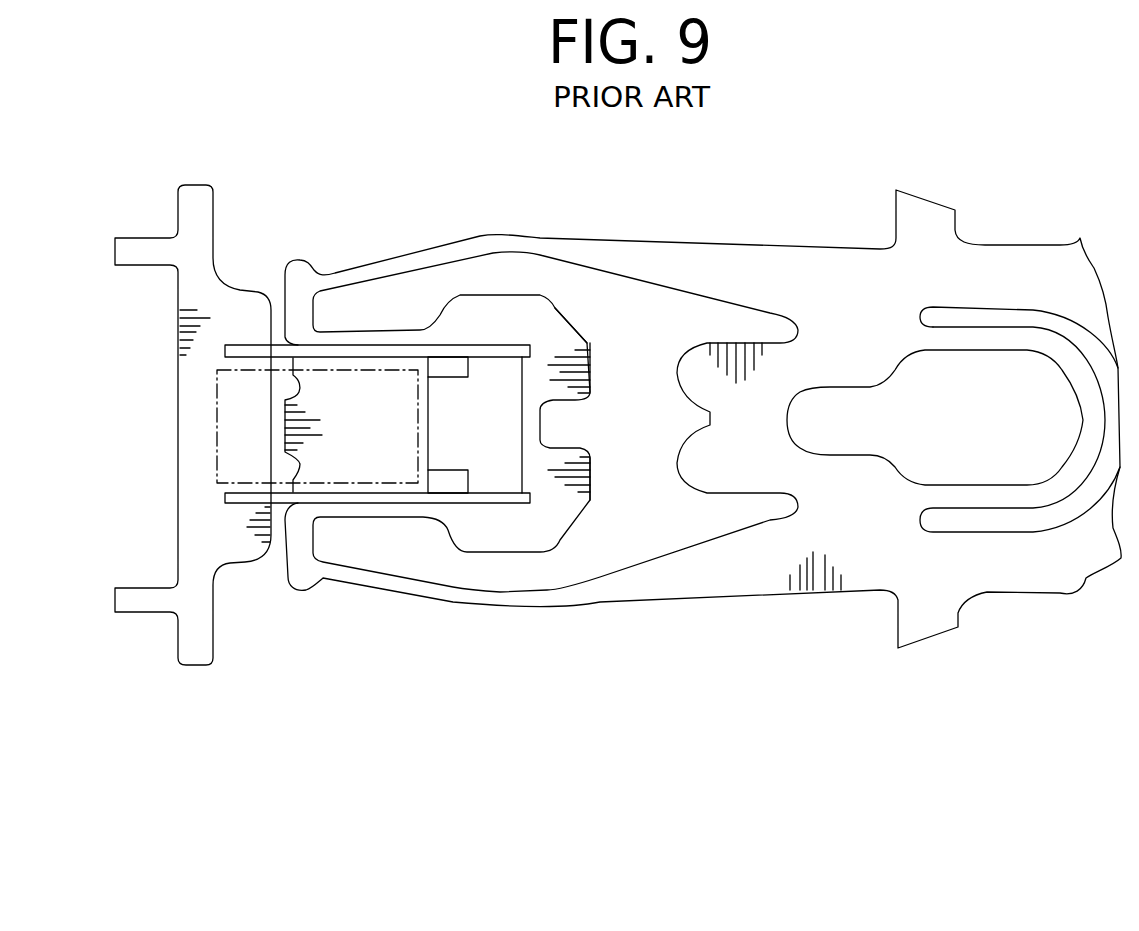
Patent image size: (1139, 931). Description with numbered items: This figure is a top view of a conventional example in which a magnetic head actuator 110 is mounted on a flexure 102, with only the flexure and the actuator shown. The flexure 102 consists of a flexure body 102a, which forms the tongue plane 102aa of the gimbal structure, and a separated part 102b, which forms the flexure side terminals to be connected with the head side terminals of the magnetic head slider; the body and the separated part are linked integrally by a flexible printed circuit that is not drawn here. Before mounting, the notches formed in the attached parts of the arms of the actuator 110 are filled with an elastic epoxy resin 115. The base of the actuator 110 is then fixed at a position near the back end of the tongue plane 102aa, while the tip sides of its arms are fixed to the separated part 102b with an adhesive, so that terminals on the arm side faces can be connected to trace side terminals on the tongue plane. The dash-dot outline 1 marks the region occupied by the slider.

The head slider 1 is at (215, 420).
The flexure 102 is at (618, 537).
The flexure body 102a is at (412, 598).
The separated part 102b is at (200, 640).
The tongue plane 102aa is at (577, 520).
The magnetic head actuator 110 is at (483, 347).
The elastic epoxy resin 115 is at (428, 363).